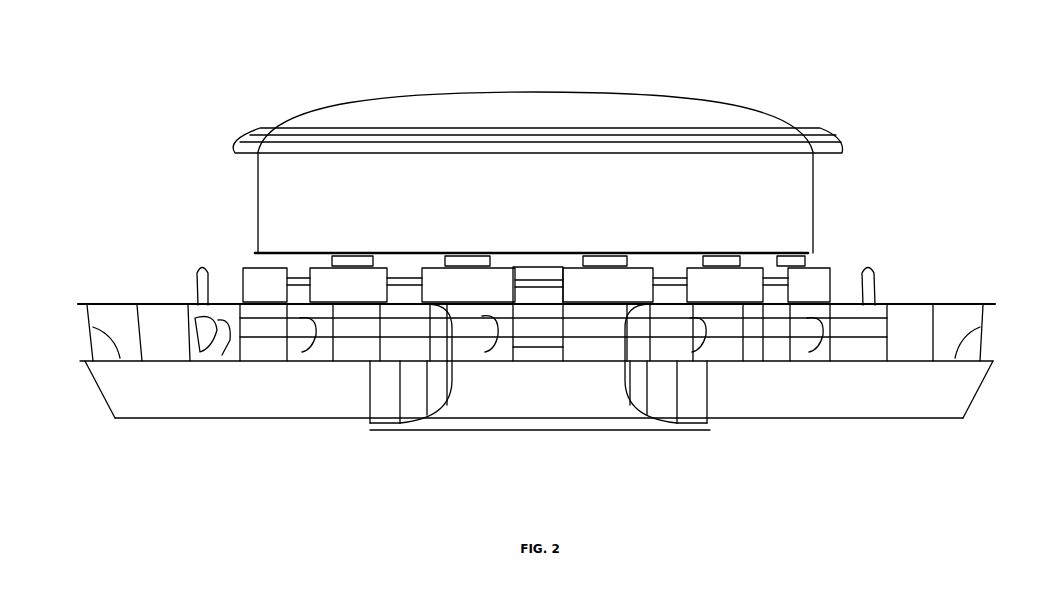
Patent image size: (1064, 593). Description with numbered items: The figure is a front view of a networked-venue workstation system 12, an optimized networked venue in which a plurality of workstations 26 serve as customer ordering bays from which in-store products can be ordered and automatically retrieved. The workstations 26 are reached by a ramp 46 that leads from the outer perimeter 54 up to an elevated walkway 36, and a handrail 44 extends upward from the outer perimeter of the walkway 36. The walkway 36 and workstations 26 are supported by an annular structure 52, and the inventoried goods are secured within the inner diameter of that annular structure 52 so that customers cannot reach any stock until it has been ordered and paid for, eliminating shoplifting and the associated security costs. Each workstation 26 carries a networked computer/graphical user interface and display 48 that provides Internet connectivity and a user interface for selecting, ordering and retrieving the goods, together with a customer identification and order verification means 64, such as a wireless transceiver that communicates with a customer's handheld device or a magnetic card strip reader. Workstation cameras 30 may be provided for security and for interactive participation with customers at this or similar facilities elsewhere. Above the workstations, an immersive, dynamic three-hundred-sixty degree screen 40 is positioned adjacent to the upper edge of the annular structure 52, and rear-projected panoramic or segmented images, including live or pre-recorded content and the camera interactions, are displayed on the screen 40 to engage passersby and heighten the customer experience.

The networked-venue workstation system 12 is at (468, 66).
The workstations 26 is at (447, 253).
The workstation cameras 30 is at (243, 270).
The elevated walkway 36 is at (93, 327).
The 360 degree screen 40 is at (483, 175).
The handrail 44 is at (107, 303).
The ramp 46 is at (497, 415).
The networked computer/graphical user interface and display 48 is at (467, 253).
The annular structure 52 is at (281, 253).
The outer perimeter 54 is at (83, 361).
The customer identification and order verification means 64 is at (181, 303).